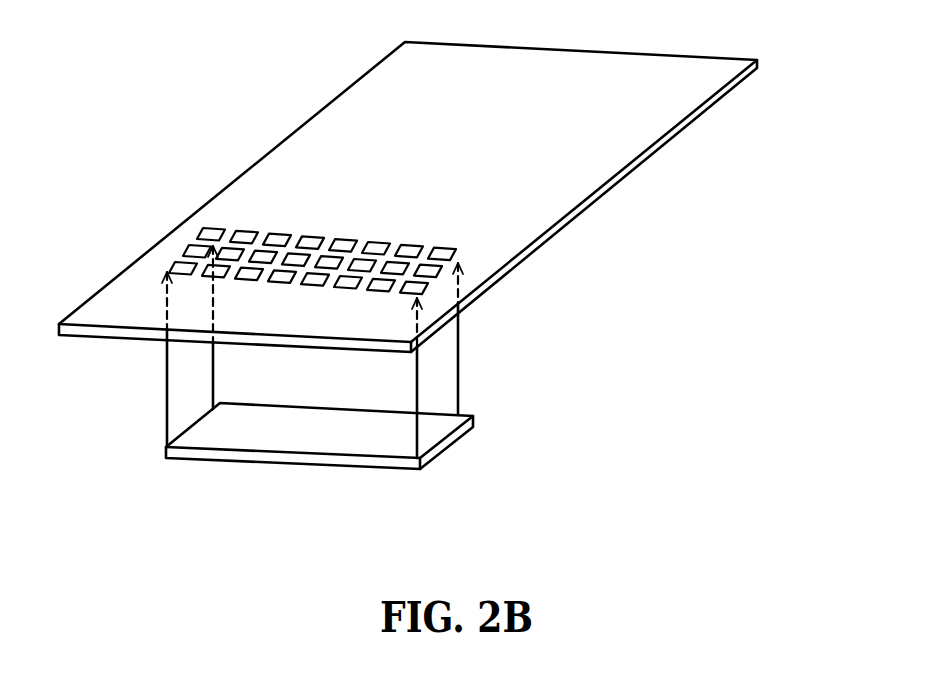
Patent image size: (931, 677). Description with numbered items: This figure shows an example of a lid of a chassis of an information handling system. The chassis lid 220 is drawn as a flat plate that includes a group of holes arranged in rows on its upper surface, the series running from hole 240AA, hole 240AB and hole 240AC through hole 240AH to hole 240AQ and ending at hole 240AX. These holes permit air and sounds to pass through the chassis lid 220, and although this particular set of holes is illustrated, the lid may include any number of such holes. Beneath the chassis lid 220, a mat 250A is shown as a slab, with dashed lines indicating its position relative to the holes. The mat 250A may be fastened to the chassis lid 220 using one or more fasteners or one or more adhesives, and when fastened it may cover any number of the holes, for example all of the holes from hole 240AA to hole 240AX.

The chassis lid 220 is at (735, 58).
The hole 240AA is at (218, 228).
The hole 240AB is at (251, 229).
The hole 240AC is at (285, 234).
The hole 240AH is at (447, 251).
The hole 240AQ is at (173, 268).
The hole 240AX is at (427, 290).
The mat 250A is at (292, 465).